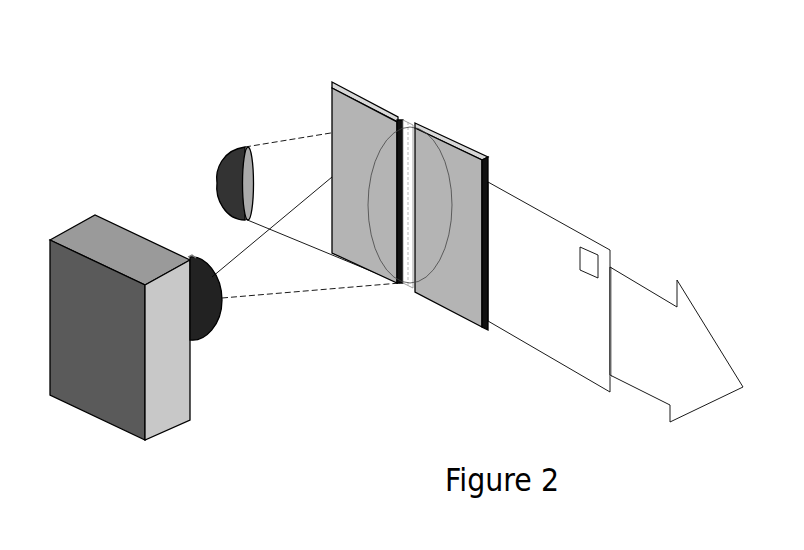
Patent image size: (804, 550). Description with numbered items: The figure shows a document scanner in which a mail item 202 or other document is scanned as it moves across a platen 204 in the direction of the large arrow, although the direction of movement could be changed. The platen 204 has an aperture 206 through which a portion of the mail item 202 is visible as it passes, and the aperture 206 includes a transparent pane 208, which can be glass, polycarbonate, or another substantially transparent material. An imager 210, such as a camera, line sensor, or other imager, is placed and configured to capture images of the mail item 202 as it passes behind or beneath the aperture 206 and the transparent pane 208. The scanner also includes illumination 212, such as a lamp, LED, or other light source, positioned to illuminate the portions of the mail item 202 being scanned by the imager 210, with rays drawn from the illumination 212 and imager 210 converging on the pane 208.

The mail item 202 is at (522, 191).
The platen 204 is at (367, 182).
The aperture 206 is at (418, 124).
The transparent pane 208 is at (408, 288).
The imager 210 is at (167, 436).
The illumination 212 is at (243, 141).